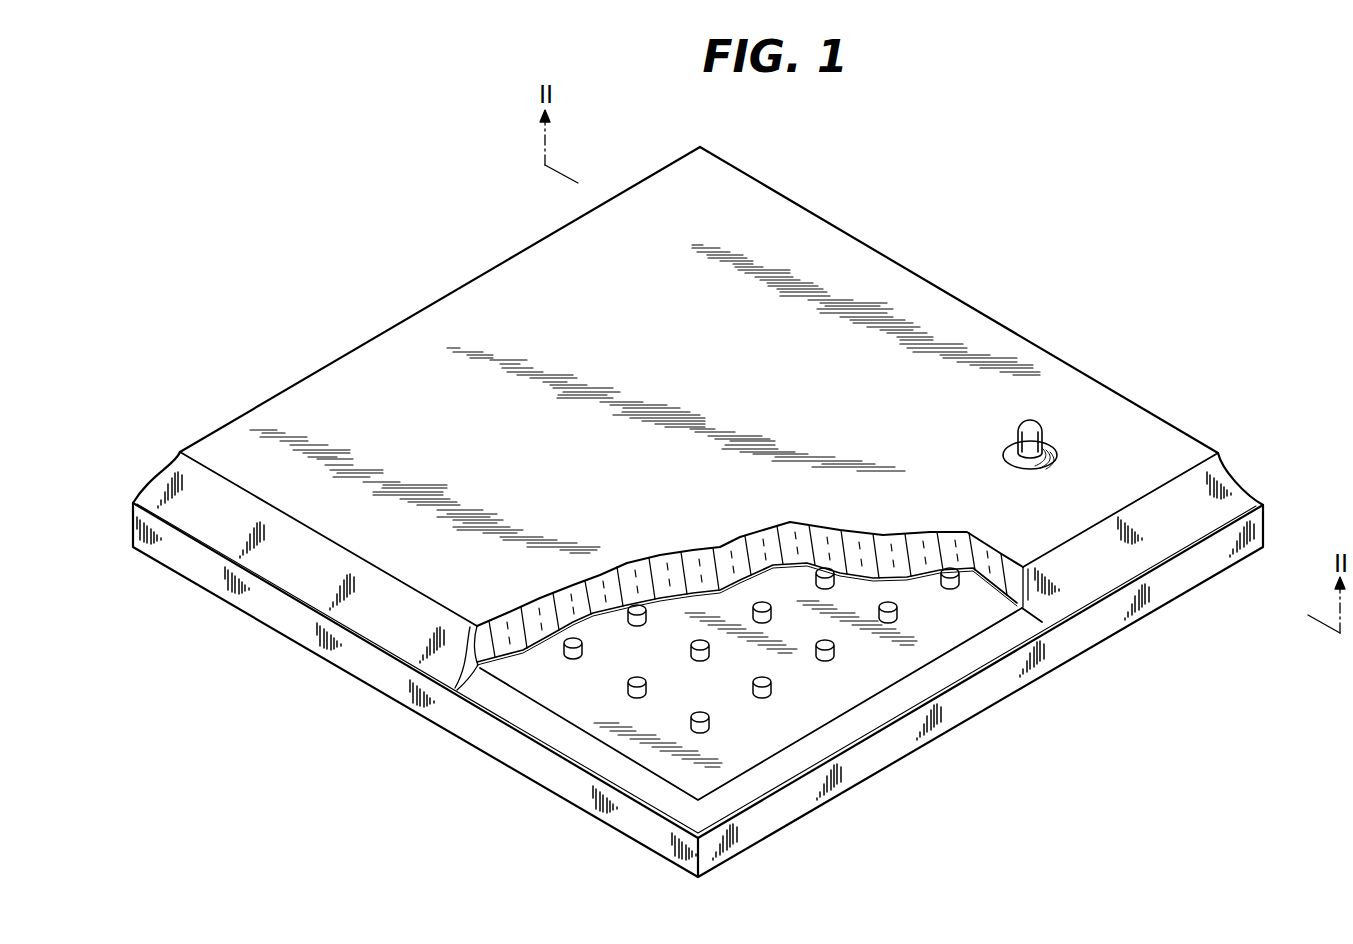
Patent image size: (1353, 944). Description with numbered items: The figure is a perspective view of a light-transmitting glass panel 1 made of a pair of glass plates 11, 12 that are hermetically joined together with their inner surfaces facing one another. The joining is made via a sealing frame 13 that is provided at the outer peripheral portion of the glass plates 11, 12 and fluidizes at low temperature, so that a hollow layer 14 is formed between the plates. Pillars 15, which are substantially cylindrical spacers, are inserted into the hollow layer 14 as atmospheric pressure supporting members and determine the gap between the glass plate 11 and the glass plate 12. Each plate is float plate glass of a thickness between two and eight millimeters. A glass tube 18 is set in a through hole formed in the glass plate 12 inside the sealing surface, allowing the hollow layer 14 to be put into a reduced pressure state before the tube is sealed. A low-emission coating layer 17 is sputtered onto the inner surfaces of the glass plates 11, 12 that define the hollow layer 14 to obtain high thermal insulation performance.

The light-transmitting glass panel 1 is at (934, 271).
The glass plate 11 is at (1257, 526).
The glass plate 12 is at (830, 248).
The sealing frame 13 is at (500, 707).
The hollow layer 14 is at (920, 634).
The pillars 15 is at (832, 660).
The low-emission coating layer 17 is at (557, 755).
The glass tube 18 is at (1030, 417).